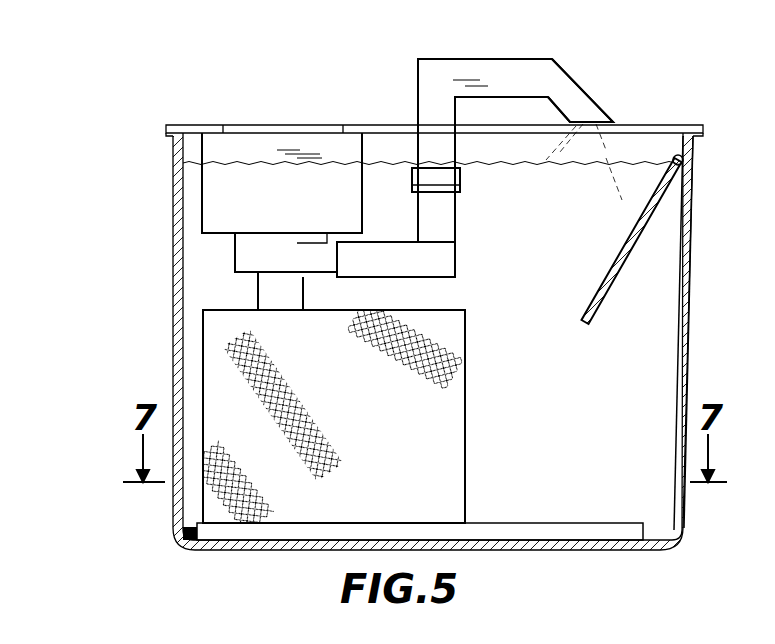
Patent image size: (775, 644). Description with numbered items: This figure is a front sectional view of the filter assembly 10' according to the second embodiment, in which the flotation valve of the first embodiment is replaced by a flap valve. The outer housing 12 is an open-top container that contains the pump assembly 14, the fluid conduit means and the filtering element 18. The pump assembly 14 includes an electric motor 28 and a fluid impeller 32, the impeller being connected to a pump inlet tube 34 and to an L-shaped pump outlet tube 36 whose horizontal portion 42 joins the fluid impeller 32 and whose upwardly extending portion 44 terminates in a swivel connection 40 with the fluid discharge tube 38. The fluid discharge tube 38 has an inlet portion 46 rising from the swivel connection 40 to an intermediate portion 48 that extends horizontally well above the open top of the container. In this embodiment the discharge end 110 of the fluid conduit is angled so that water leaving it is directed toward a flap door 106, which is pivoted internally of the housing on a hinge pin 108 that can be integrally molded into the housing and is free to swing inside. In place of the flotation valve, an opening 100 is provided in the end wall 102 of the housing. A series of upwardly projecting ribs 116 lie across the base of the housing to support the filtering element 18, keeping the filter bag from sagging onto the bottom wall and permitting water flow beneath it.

The filter assembly 10' is at (69, 314).
The outer housing 12 is at (176, 370).
The pump assembly 14 is at (226, 152).
The filtering element 18 is at (465, 395).
The electric motor 28 is at (250, 140).
The fluid impeller 32 is at (235, 252).
The pump inlet tube 34 is at (303, 290).
The pump outlet tube 36 is at (455, 258).
The fluid discharge tube 38 is at (488, 59).
The swivel connection 40 is at (460, 180).
The horizontal portion 42 is at (385, 272).
The upwardly extending portion 44 is at (455, 218).
The inlet portion 46 is at (455, 150).
The intermediate portion 48 is at (440, 59).
The opening 100 is at (688, 283).
The end wall 102 is at (687, 362).
The flap door 106 is at (606, 283).
The hinge pin 108 is at (676, 158).
The discharge end 110 is at (577, 100).
The ribs 116 is at (520, 524).